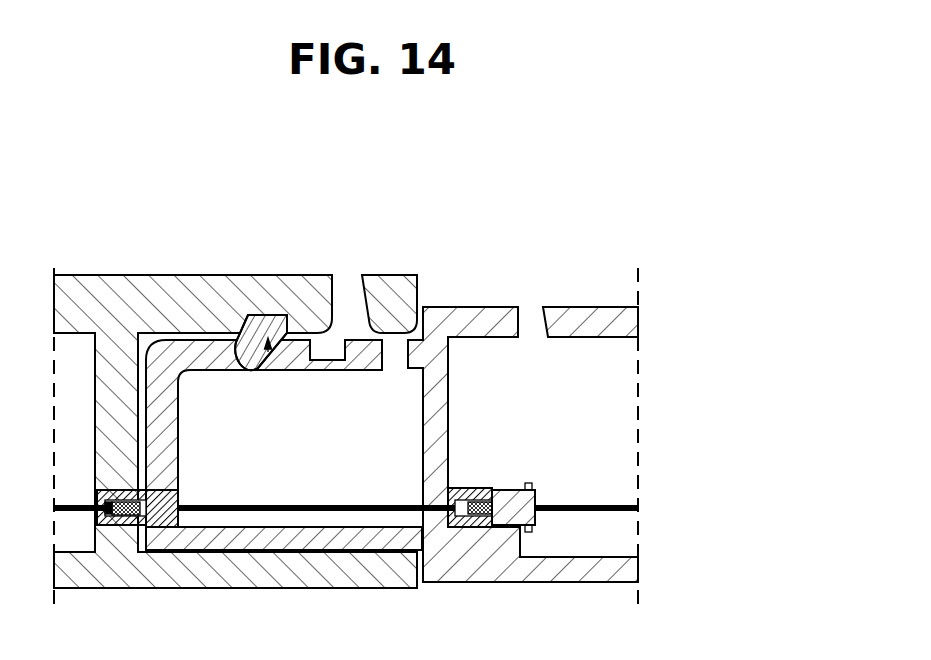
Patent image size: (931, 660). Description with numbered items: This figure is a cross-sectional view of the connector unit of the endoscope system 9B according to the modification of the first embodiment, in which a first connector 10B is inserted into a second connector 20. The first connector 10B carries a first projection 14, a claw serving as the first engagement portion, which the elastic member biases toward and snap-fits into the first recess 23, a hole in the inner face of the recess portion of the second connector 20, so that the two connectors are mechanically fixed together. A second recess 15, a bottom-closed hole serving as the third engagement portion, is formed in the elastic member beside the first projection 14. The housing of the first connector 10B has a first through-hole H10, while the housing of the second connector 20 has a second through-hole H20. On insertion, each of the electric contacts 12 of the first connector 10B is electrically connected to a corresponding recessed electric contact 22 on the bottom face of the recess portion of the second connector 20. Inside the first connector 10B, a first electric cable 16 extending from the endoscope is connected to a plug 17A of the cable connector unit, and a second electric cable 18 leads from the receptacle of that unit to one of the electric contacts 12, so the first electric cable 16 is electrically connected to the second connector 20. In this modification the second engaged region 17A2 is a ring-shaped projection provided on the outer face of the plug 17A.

The second connector 20 is at (72, 223).
The second through-hole H20 is at (342, 267).
The first recess 23 is at (243, 360).
The first projection 14 is at (278, 315).
The second recess 15 is at (337, 343).
The first connector 10B is at (602, 222).
The endoscope system 9B is at (705, 212).
The first through-hole H10 is at (531, 303).
The electric contacts 12 is at (158, 527).
The electric contacts 22 is at (117, 527).
The plug 17A is at (503, 527).
The second engaged region 17A2 is at (533, 525).
The second electric cable 18 is at (320, 510).
The first electric cable 16 is at (615, 510).